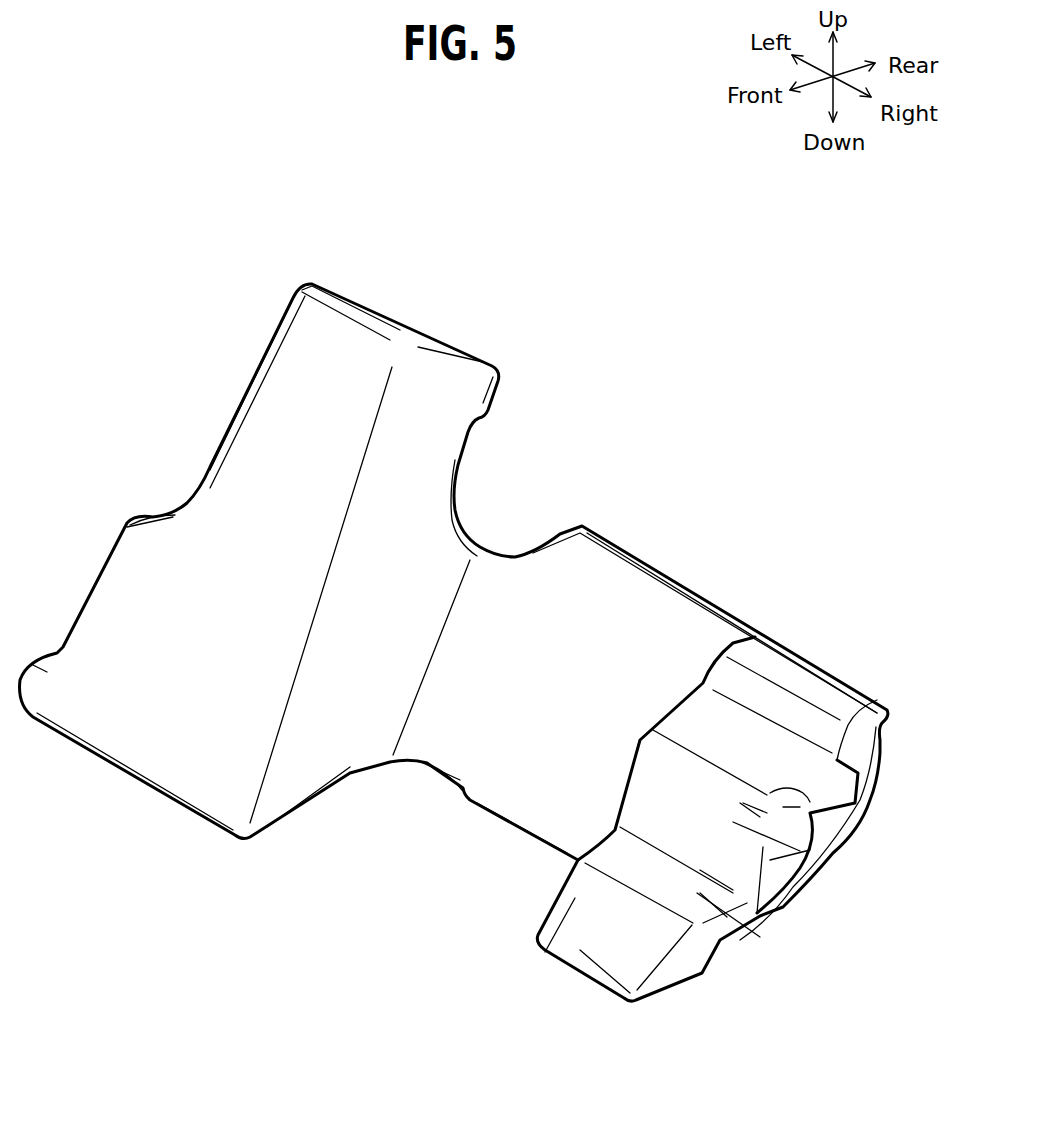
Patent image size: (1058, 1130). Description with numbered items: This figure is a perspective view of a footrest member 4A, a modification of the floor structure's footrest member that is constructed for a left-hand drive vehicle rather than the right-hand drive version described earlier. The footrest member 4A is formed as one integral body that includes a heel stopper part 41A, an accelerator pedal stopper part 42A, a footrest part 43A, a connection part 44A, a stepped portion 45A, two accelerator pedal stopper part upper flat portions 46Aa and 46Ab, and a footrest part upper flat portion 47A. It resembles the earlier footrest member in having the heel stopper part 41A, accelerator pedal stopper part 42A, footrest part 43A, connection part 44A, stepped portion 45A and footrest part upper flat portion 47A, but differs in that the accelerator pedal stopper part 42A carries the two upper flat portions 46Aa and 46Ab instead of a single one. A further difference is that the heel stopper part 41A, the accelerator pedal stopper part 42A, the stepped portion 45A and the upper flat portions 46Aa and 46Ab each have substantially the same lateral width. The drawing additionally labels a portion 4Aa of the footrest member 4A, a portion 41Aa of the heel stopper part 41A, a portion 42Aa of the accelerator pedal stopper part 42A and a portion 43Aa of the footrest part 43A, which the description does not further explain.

The footrest member 4A is at (258, 256).
The recessed portion 4Aa is at (452, 820).
The heel stopper part 41A is at (648, 948).
The end surface 41Aa is at (592, 943).
The accelerator pedal stopper part 42A is at (792, 900).
The end portion of flange 42Aa is at (807, 868).
The footrest part 43A is at (263, 493).
The projection 43Aa is at (223, 547).
The connection part 44A is at (602, 610).
The stepped portion 45A is at (733, 943).
The accelerator pedal stopper part upper flat portion 46Aa is at (747, 747).
The accelerator pedal stopper part upper flat portion 46Ab is at (815, 680).
The footrest part upper flat portion 47A is at (463, 290).